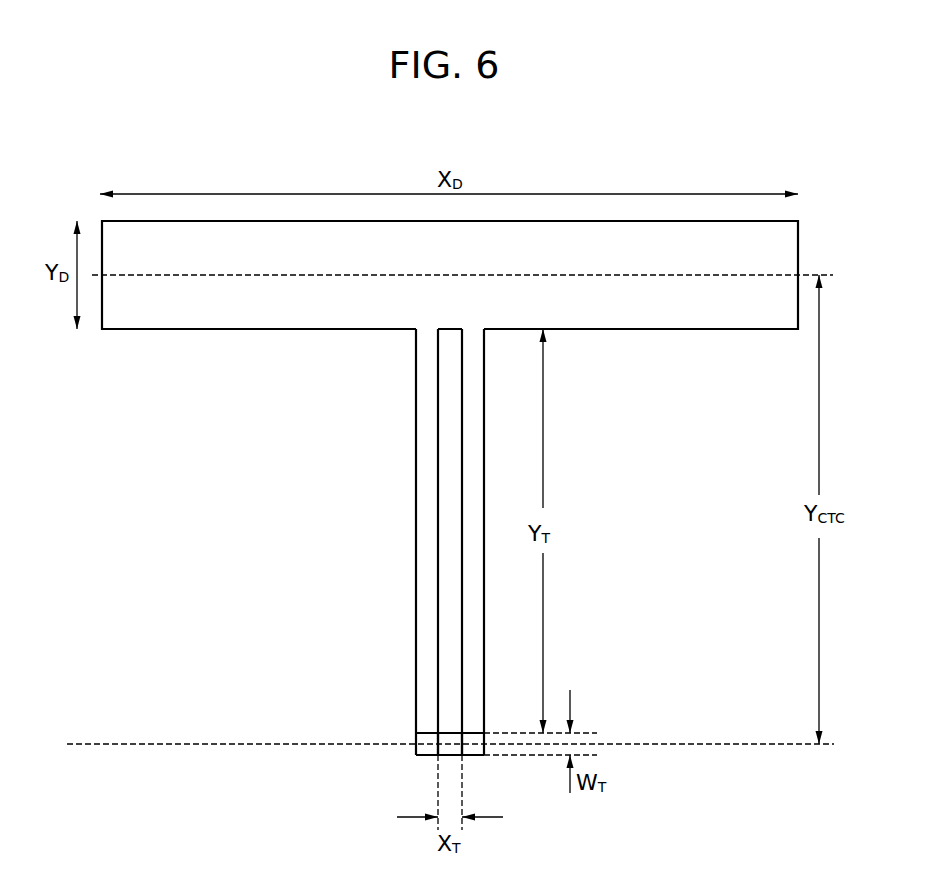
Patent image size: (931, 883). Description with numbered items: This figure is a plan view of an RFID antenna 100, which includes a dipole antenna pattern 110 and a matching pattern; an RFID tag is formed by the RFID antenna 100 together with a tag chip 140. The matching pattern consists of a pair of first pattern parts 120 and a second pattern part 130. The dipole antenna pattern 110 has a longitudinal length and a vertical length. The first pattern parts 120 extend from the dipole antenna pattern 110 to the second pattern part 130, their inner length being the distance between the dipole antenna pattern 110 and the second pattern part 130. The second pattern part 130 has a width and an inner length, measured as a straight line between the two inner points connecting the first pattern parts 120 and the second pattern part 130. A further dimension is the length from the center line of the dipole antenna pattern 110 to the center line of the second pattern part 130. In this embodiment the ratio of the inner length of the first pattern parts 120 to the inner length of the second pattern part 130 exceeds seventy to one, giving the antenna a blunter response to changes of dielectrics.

The RFID antenna 100 is at (93, 143).
The dipole antenna pattern 110 is at (147, 318).
The first pattern parts 120 is at (427, 598).
The second pattern part 130 is at (473, 749).
The tag chip 140 is at (450, 748).